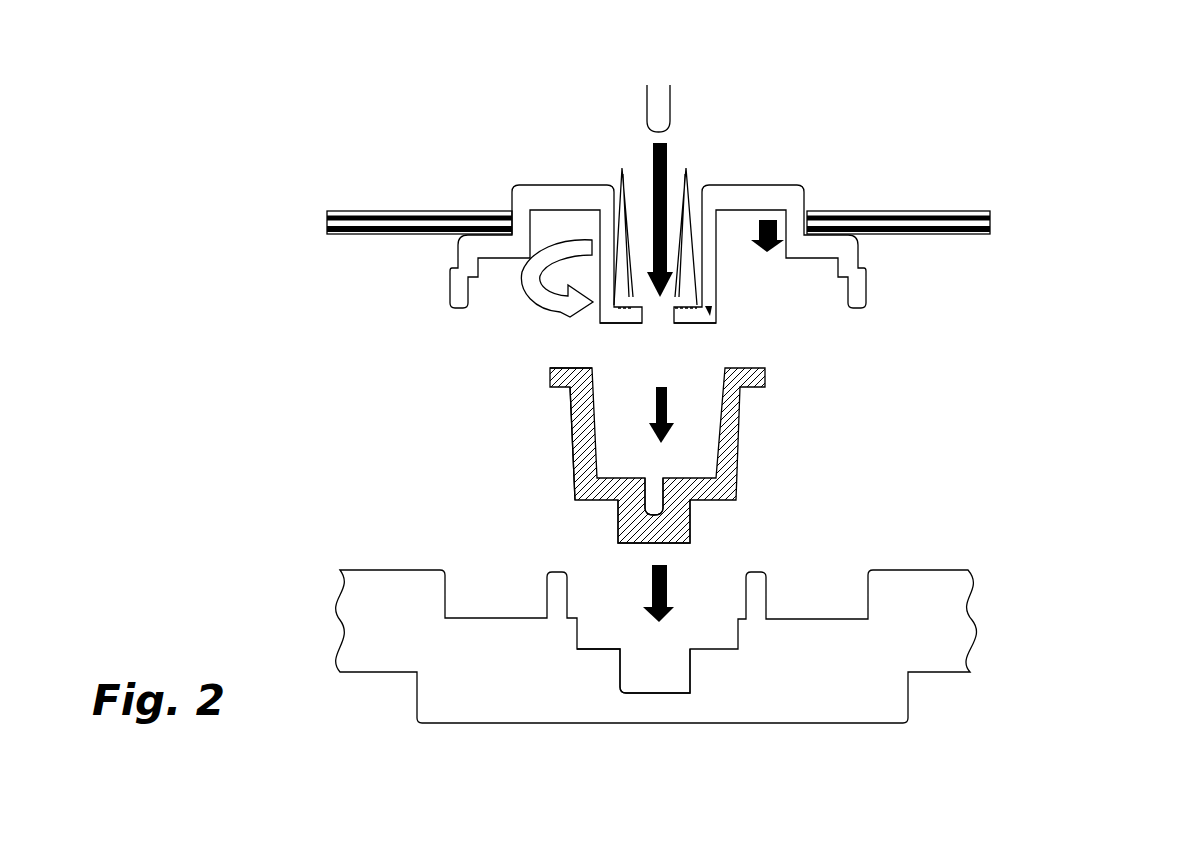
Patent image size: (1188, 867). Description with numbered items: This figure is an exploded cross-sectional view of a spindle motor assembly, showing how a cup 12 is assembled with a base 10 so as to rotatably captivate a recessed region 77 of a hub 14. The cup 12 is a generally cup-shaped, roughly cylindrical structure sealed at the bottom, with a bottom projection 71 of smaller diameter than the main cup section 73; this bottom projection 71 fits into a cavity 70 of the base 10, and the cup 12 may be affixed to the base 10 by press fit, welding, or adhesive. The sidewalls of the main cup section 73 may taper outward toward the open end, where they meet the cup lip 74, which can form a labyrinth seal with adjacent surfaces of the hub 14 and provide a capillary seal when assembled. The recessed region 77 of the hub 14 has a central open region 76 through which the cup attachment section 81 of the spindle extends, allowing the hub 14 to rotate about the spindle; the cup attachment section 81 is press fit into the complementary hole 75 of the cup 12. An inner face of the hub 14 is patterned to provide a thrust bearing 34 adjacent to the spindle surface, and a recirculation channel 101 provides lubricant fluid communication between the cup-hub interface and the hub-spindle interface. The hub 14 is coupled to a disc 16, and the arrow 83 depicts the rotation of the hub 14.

The base 10 is at (950, 727).
The cup 12 is at (715, 538).
The hub 14 is at (750, 197).
The disc 16 is at (893, 215).
The thrust bearing 34 is at (655, 224).
The cavity 70 is at (660, 693).
The bottom projection 71 is at (600, 537).
The main cup section 73 is at (555, 468).
The cup lip 74 is at (550, 371).
The complementary hole 75 is at (655, 497).
The central open region 76 is at (672, 327).
The recessed region 77 is at (725, 307).
The cup attachment section 81 is at (775, 83).
The arrow 83 is at (553, 293).
The recirculation channel 101 is at (707, 308).